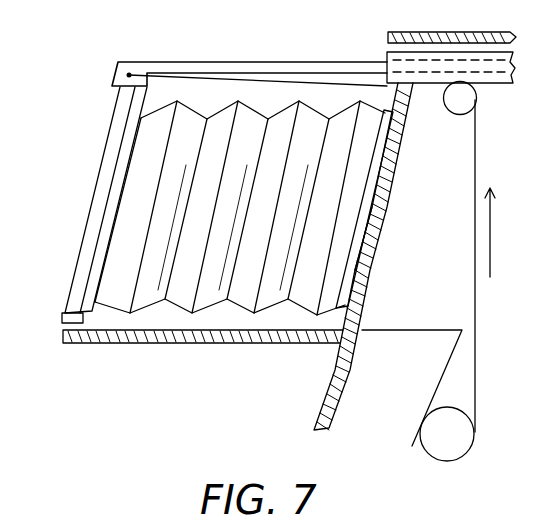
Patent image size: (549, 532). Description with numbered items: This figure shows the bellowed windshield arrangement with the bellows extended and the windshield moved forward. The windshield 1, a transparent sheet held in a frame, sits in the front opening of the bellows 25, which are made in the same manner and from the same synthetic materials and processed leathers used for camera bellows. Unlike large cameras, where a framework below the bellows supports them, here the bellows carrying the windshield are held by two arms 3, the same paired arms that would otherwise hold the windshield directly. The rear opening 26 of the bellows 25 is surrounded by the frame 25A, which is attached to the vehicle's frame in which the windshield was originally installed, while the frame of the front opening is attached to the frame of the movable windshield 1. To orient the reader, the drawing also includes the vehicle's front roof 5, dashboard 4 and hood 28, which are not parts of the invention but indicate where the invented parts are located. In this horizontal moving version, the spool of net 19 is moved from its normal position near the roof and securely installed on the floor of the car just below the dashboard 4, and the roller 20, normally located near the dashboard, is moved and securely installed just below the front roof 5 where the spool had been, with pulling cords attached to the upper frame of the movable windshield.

The windshield 1 is at (88, 236).
The arms 3 is at (182, 62).
The dashboard 4 is at (357, 380).
The front roof 5 is at (417, 22).
The spool of net 19 is at (475, 437).
The roller 20 is at (457, 122).
The bellows 25 is at (251, 100).
The frame 25A is at (374, 205).
The rear opening 26 is at (122, 152).
The hood 28 is at (160, 346).